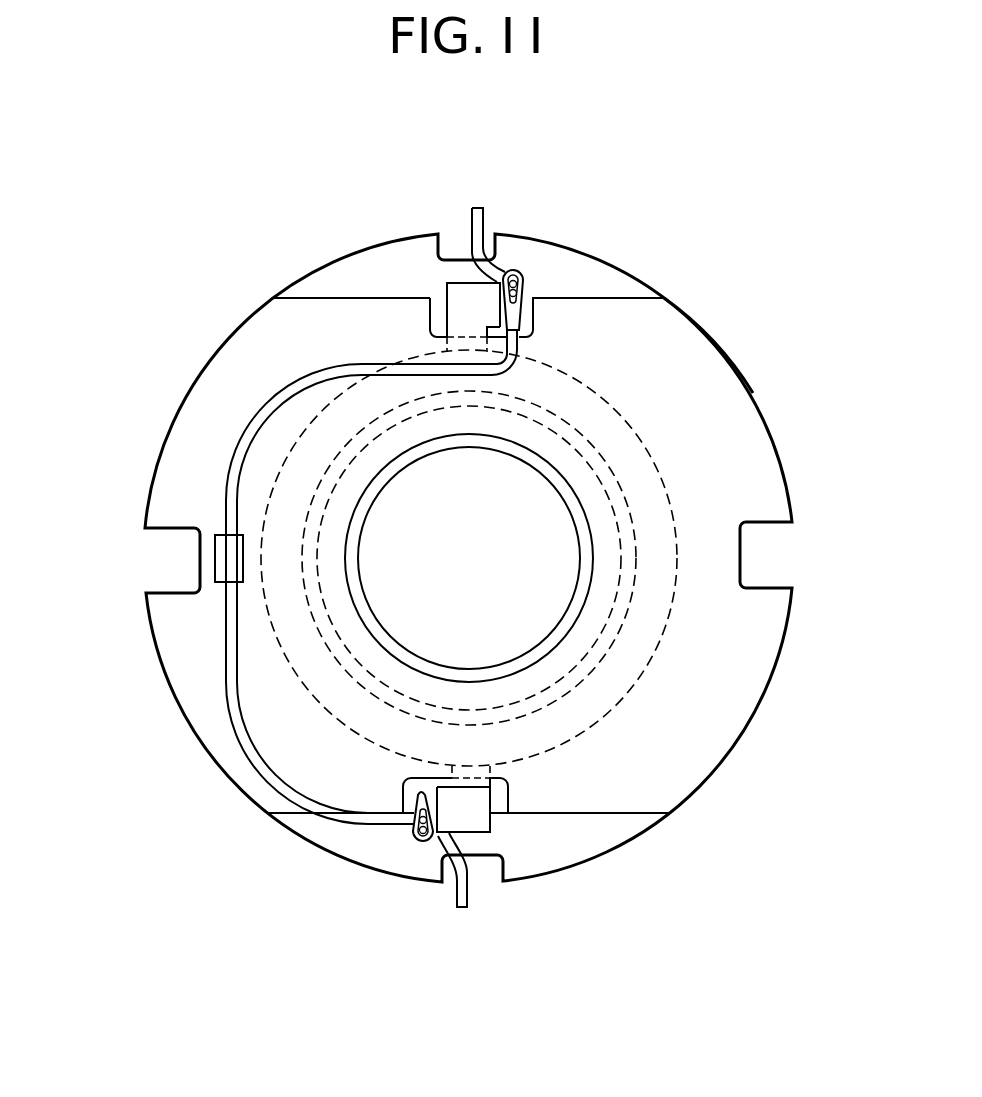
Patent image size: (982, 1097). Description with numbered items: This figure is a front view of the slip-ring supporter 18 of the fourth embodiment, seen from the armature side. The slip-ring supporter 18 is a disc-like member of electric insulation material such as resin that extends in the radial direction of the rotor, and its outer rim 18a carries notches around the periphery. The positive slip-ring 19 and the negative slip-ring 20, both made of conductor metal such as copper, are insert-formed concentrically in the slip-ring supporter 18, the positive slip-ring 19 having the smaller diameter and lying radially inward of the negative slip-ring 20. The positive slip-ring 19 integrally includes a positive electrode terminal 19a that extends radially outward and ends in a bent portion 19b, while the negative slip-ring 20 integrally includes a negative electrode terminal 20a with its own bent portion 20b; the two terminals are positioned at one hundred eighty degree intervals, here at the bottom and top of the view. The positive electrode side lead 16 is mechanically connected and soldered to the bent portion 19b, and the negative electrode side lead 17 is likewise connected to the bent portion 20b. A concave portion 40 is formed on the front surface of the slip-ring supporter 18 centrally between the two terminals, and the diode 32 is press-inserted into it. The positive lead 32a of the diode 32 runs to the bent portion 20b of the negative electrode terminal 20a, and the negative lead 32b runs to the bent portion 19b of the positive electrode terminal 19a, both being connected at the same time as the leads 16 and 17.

The positive electrode side lead 16 is at (457, 887).
The negative electrode side lead 17 is at (487, 222).
The slip-ring supporter 18 is at (753, 393).
The flange of bobbin 18a is at (707, 330).
The positive slip-ring 19 is at (585, 637).
The positive electrode terminal 19a is at (483, 792).
The bent portion 19b is at (412, 838).
The negative slip-ring 20 is at (670, 493).
The negative electrode terminal 20a is at (462, 322).
The bent portion 20b is at (523, 272).
The diode 32 is at (230, 553).
The positive lead 32a is at (260, 417).
The negative lead 32b is at (247, 737).
The concave portion 40 is at (222, 582).